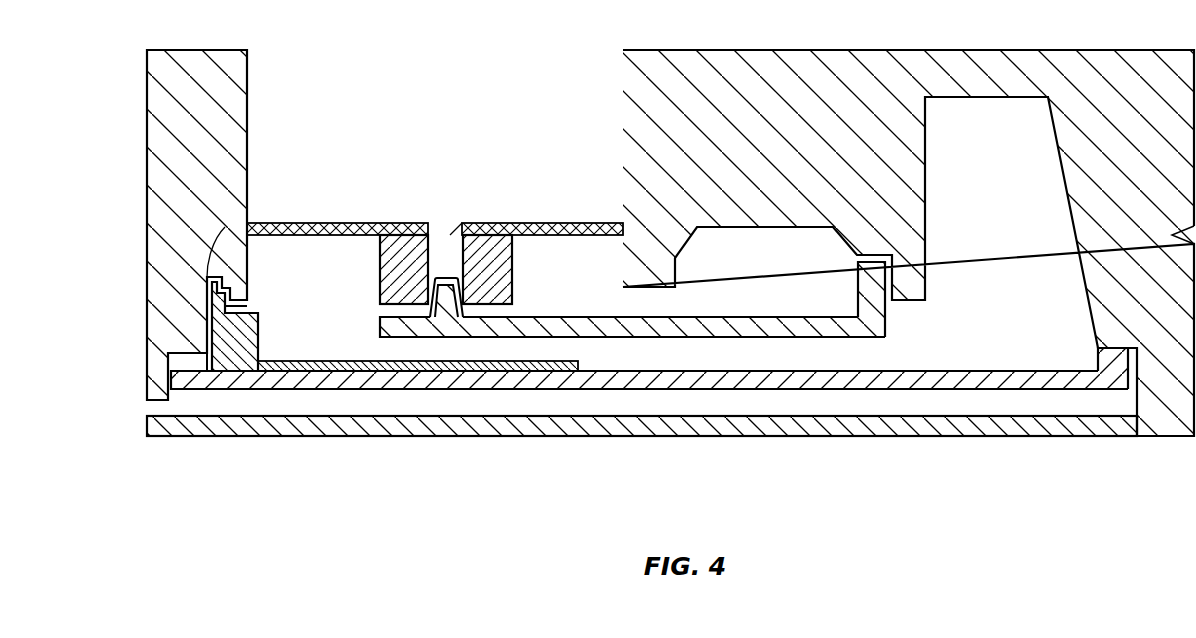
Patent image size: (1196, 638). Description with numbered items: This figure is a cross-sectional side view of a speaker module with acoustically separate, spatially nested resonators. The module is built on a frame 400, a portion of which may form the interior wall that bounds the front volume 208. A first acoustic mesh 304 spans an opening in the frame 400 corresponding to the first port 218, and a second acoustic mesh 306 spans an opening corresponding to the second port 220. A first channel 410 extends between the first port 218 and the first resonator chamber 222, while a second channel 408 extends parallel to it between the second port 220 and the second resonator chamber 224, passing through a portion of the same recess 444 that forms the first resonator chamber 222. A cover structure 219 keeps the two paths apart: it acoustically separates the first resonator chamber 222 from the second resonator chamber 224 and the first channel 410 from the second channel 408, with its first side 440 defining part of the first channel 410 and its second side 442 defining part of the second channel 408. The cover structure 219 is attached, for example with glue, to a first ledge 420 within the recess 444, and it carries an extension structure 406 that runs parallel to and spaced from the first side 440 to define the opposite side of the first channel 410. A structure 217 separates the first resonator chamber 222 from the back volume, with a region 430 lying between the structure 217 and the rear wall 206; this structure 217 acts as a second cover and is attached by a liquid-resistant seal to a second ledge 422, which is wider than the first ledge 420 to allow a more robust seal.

The rear wall 206 is at (733, 425).
The front volume 208 is at (600, 38).
The structure 217 is at (933, 382).
The first port 218 is at (320, 209).
The cover structure 219 is at (255, 330).
The second port 220 is at (586, 213).
The first resonator chamber 222 is at (940, 322).
The second resonator chamber 224 is at (747, 272).
The first acoustic mesh 304 is at (397, 222).
The second acoustic mesh 306 is at (535, 222).
The frame 400 is at (182, 175).
The extension structure 406 is at (578, 361).
The second channel 408 is at (640, 314).
The first channel 410 is at (432, 361).
The first ledge 420 is at (225, 228).
The second ledge 422 is at (190, 350).
The region 430 is at (843, 408).
The first side 440 is at (770, 337).
The second side 442 is at (700, 315).
The recess 444 is at (1040, 348).